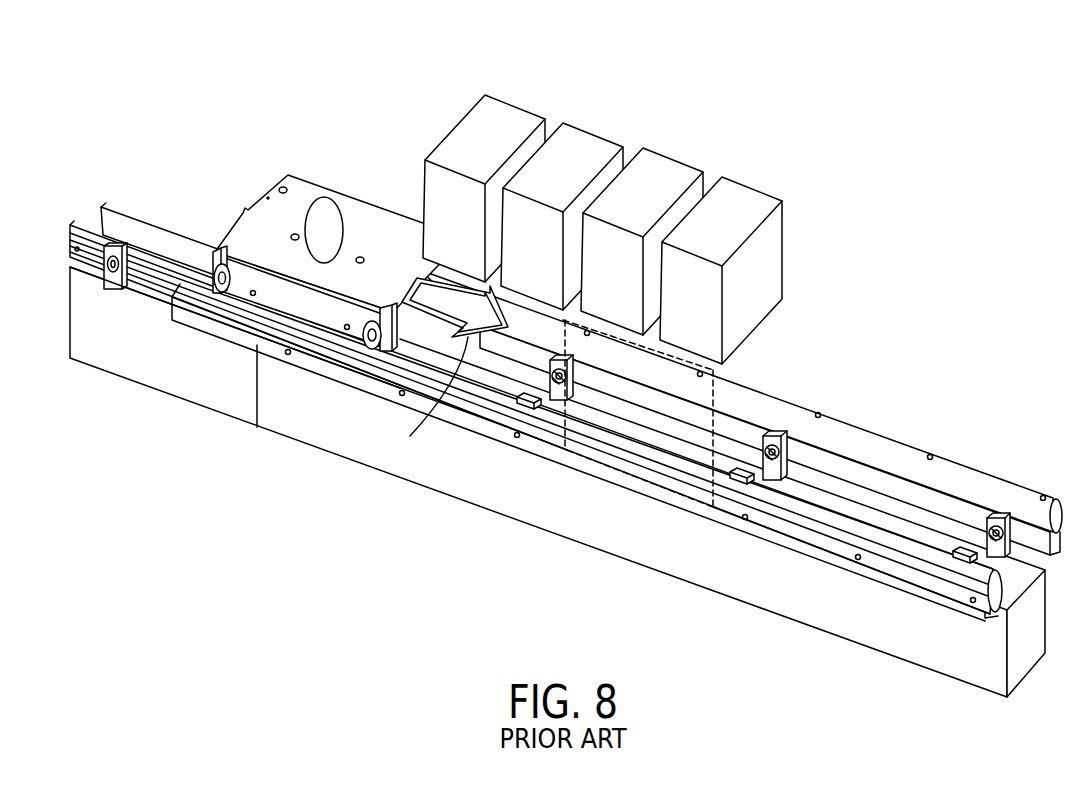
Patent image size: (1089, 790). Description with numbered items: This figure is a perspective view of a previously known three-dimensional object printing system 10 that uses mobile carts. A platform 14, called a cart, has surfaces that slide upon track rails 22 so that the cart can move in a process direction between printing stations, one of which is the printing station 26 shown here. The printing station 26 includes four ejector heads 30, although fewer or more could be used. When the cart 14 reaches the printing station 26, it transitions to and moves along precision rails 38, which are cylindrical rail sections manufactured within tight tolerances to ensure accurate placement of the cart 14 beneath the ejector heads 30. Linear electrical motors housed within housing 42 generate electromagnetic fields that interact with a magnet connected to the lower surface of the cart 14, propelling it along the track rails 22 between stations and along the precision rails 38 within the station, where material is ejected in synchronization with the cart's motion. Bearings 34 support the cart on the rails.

The three-dimensional object printing system 10 is at (559, 364).
The platform 14 is at (340, 191).
The track rails 22 is at (86, 218).
The printing station 26 is at (619, 198).
The ejector heads 30 is at (602, 206).
The bearings 34 is at (215, 250).
The precision rails 38 is at (860, 444).
The housing 42 is at (813, 618).